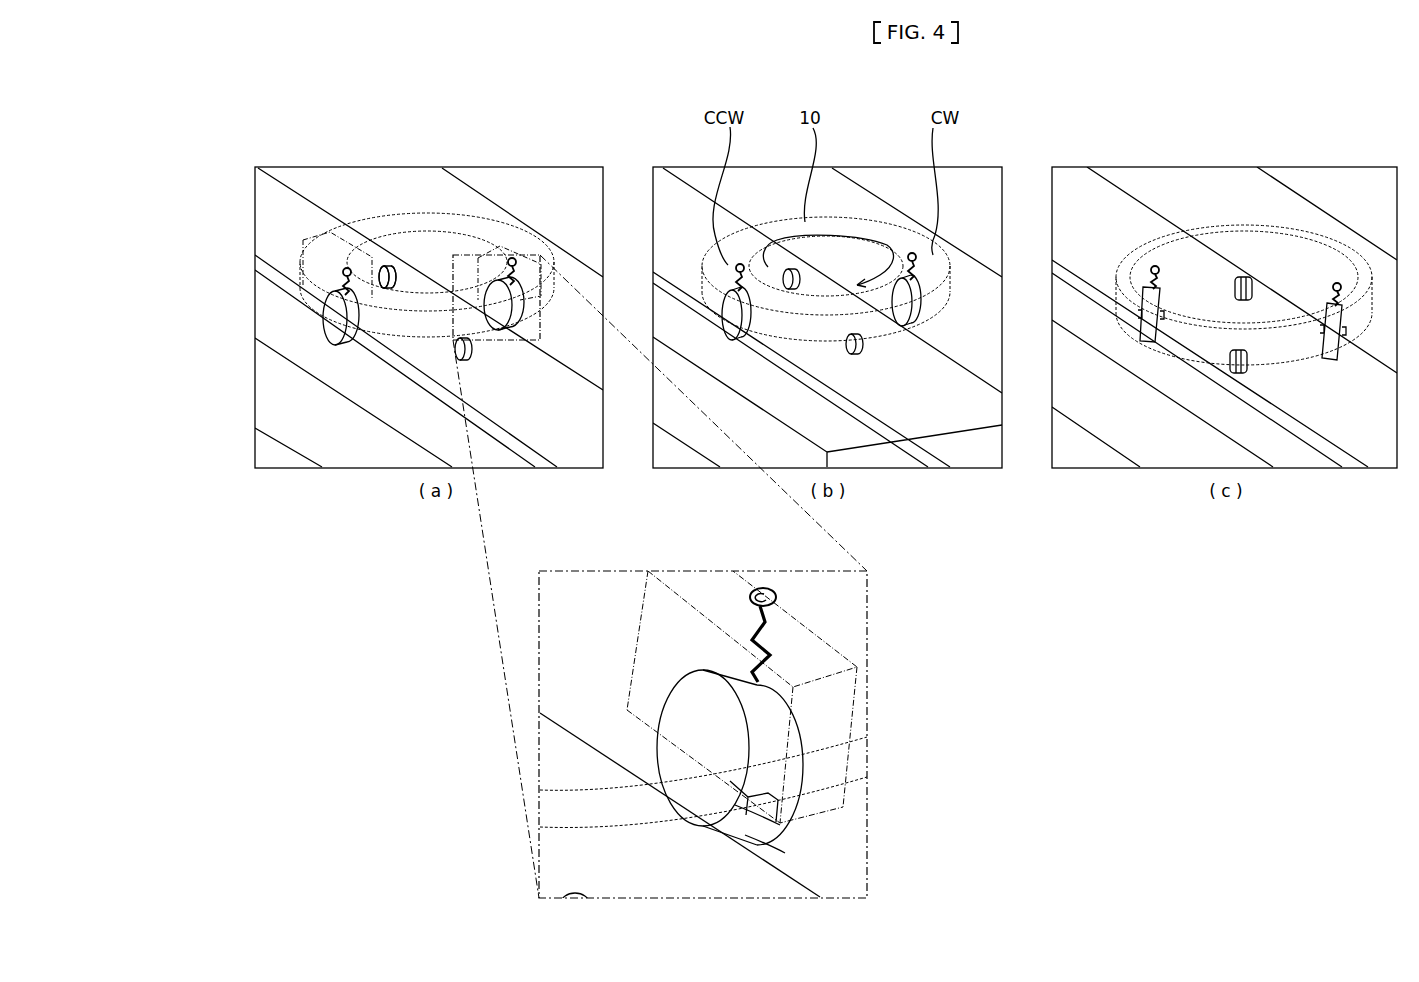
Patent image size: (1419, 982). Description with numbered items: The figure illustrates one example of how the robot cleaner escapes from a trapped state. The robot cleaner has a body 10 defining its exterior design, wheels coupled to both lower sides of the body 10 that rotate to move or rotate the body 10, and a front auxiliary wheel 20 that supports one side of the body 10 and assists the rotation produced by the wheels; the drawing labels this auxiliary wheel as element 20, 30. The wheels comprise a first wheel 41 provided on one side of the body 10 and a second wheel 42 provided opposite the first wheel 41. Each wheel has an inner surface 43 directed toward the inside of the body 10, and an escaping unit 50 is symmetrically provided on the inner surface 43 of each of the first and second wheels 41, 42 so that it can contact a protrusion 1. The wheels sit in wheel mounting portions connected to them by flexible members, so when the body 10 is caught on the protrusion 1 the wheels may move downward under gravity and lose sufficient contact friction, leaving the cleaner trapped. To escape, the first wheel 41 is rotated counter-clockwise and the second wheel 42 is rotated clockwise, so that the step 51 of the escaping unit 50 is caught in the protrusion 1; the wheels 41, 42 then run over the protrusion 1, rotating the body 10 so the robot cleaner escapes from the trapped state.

The protrusion 1 is at (395, 400).
The body 10 is at (393, 213).
The front auxiliary wheel 20 is at (380, 267).
The second drive unit 30 is at (387, 277).
The first wheel 41 is at (330, 336).
The second wheel 42 is at (523, 226).
The inner surface 43 is at (703, 748).
The escaping unit 50 is at (760, 829).
The step 51 is at (754, 801).